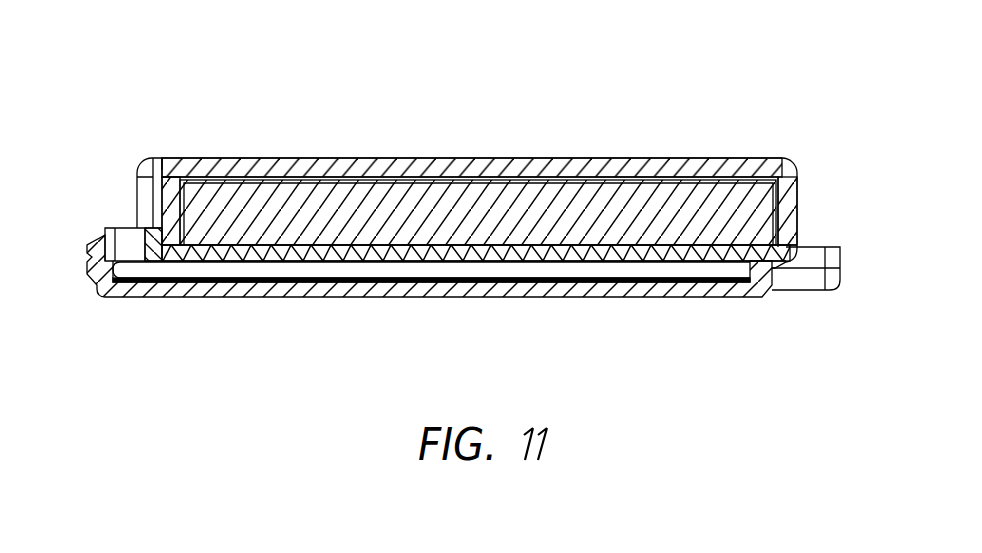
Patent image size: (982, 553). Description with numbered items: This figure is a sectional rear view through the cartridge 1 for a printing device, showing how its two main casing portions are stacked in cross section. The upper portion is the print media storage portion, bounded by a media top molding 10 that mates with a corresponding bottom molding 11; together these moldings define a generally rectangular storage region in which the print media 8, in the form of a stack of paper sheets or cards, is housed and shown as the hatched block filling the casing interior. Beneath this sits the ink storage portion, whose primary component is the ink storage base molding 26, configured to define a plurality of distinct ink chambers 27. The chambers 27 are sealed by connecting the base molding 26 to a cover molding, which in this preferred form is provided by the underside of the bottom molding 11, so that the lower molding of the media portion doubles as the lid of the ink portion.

The cartridge 1 is at (535, 102).
The print media 8 is at (745, 217).
The media top molding 10 is at (753, 160).
The bottom molding 11 is at (145, 228).
The ink storage base molding 26 is at (660, 288).
The ink chambers 27 is at (183, 273).